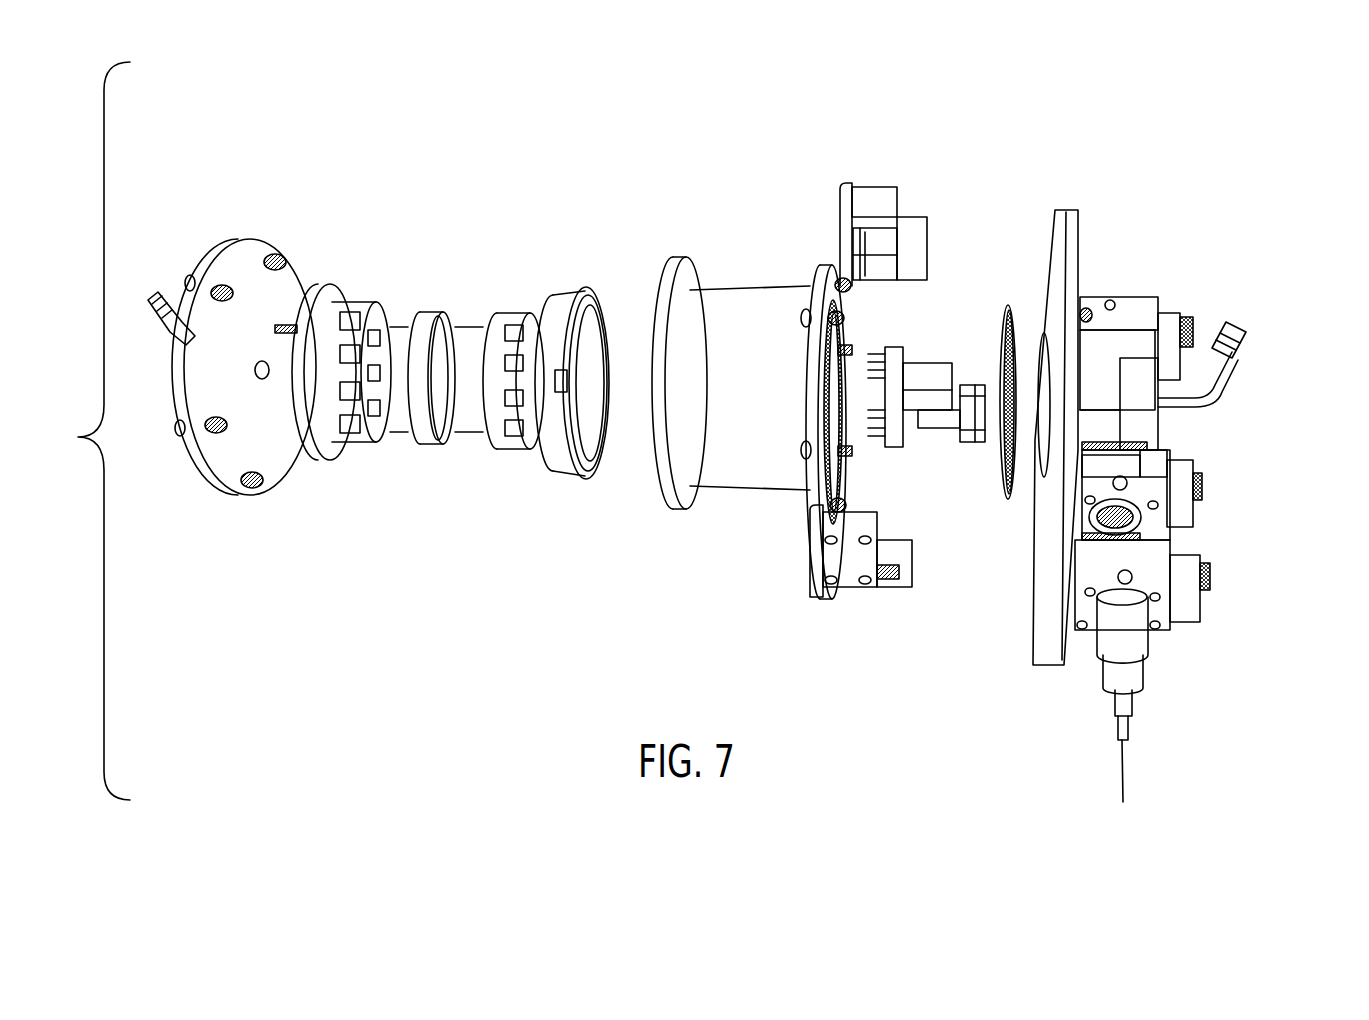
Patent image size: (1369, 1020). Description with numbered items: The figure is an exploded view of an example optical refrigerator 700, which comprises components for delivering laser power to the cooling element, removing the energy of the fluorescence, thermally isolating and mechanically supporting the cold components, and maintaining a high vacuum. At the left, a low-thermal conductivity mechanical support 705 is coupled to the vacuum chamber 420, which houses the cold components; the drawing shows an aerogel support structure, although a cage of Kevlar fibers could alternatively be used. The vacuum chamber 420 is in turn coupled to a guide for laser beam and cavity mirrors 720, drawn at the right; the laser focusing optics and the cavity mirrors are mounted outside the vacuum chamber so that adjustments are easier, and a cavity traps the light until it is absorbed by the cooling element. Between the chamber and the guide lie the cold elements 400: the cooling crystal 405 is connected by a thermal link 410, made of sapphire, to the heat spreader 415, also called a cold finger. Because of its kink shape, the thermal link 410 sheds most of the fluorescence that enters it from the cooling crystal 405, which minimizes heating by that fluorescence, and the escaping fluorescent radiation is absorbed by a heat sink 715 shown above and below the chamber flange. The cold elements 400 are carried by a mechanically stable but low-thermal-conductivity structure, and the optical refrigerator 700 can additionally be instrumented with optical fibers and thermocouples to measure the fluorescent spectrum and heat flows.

The optical refrigerator 700 is at (230, 126).
The low-thermal conductivity mechanical support 705 is at (437, 458).
The vacuum chamber 420 is at (747, 453).
The heat sink 715 is at (800, 238).
The cold elements 400 is at (917, 506).
The heat spreader 415 is at (934, 348).
The thermal link 410 is at (928, 429).
The cooling crystal 405 is at (983, 448).
The guide for laser beam and cavity mirrors 720 is at (1182, 302).